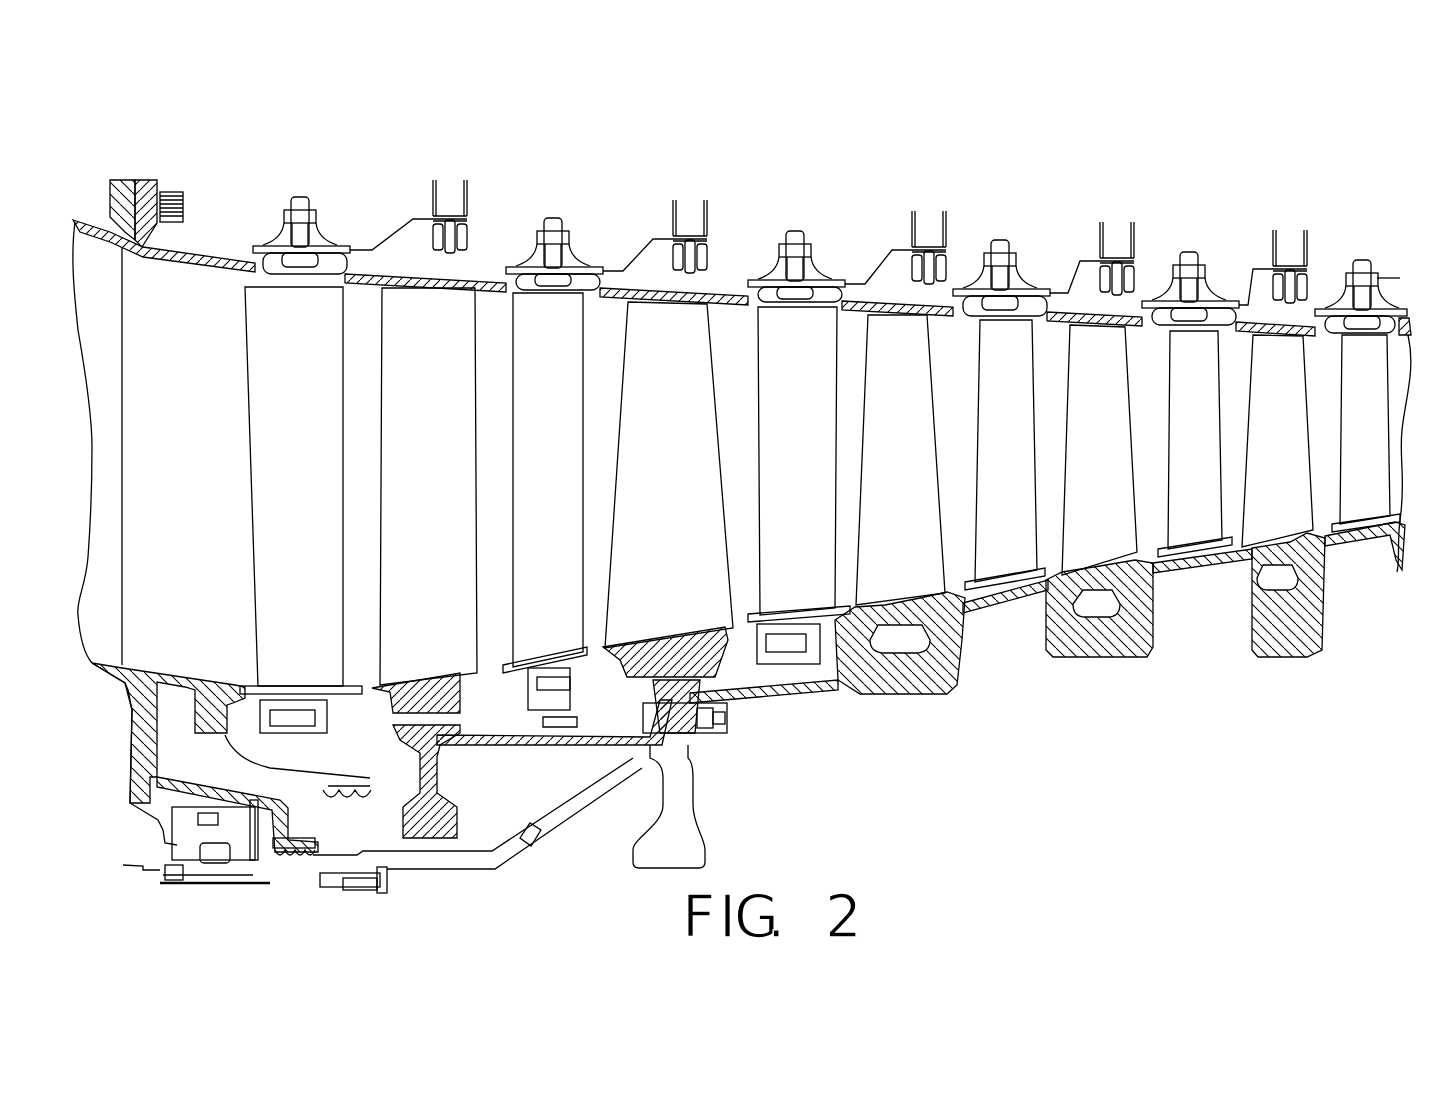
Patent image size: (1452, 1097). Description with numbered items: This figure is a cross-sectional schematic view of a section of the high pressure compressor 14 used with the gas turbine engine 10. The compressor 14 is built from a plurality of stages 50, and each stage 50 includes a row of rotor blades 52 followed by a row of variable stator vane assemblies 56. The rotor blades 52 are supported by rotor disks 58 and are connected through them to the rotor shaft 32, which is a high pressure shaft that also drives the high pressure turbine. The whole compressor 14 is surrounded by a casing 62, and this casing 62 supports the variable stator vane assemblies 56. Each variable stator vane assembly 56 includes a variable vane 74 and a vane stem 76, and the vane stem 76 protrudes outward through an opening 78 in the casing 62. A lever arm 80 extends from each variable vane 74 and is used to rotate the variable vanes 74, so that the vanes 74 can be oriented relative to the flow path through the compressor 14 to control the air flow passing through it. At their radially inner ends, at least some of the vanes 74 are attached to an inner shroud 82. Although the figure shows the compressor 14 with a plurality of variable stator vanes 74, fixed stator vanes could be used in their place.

The gas turbine engine 10 is at (390, 85).
The high pressure compressor 14 is at (245, 128).
The rotor shaft 32 is at (455, 863).
The stages 50 is at (357, 325).
The rotor blades 52 is at (1289, 485).
The variable stator vane assemblies 56 is at (262, 214).
The rotor disks 58 is at (445, 807).
The casing 62 is at (108, 180).
The variable vane 74 is at (1377, 430).
The vane stem 76 is at (290, 200).
The opening 78 is at (327, 272).
The lever arm 80 is at (365, 233).
The inner shroud 82 is at (332, 708).